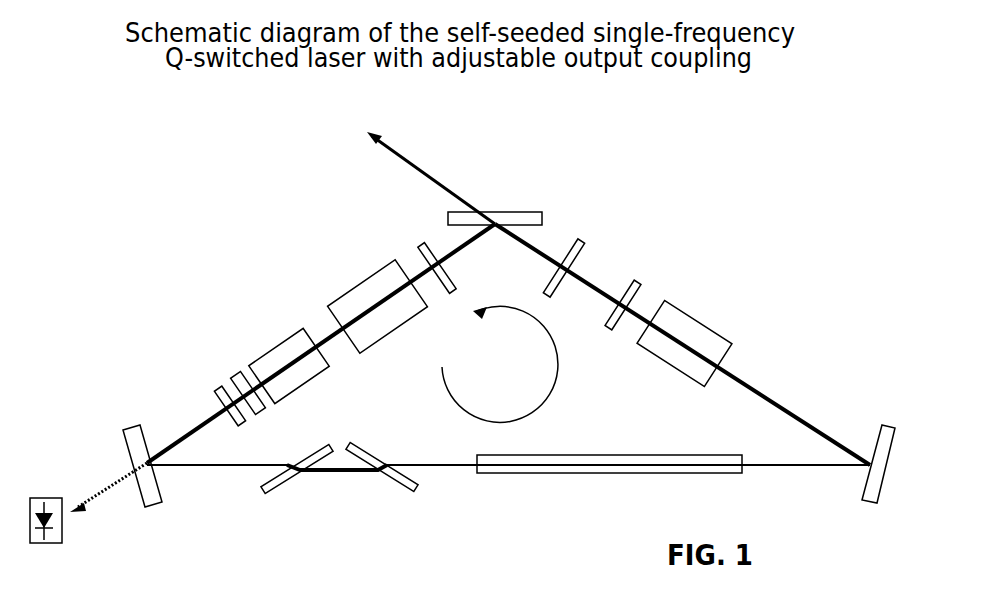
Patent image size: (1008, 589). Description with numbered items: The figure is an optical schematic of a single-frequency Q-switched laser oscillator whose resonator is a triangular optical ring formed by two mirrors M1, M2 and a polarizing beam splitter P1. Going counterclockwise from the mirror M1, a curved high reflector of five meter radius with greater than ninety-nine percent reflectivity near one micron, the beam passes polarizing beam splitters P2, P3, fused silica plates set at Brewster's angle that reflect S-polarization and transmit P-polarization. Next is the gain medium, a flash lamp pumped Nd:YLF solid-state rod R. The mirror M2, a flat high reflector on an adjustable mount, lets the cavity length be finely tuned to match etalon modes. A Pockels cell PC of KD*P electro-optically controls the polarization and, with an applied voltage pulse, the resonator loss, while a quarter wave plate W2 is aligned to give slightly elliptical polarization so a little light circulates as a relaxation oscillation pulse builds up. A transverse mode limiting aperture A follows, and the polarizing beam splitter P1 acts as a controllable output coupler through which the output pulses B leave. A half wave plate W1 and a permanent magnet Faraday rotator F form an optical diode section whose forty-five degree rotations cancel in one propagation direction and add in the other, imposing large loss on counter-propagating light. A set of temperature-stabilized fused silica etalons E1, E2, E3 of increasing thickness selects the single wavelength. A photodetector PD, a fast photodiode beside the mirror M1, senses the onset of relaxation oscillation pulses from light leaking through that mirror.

The output pulses B is at (417, 168).
The polarizing beam splitter P1 is at (495, 200).
The half wave plate W1 is at (419, 250).
The Faraday rotator F is at (378, 300).
The etalon E3 is at (285, 356).
The etalon E2 is at (234, 374).
The etalon E1 is at (208, 393).
The transverse mode limiting aperture A is at (574, 251).
The quarter wave plate W2 is at (642, 280).
The Pockels cell PC is at (689, 335).
The mirror M2 is at (873, 484).
The solid-state rod R is at (609, 483).
The polarizing beam splitter P3 is at (382, 488).
The polarizing beam splitter P2 is at (297, 489).
The mirror M1 is at (143, 484).
The photodetector PD is at (88, 500).